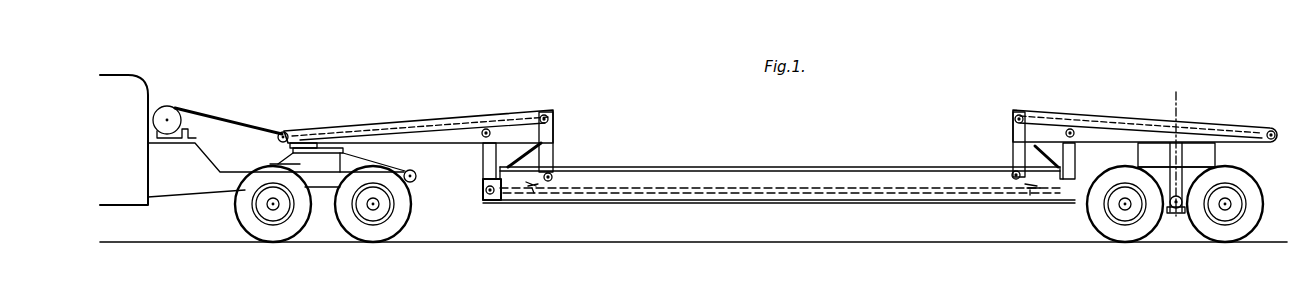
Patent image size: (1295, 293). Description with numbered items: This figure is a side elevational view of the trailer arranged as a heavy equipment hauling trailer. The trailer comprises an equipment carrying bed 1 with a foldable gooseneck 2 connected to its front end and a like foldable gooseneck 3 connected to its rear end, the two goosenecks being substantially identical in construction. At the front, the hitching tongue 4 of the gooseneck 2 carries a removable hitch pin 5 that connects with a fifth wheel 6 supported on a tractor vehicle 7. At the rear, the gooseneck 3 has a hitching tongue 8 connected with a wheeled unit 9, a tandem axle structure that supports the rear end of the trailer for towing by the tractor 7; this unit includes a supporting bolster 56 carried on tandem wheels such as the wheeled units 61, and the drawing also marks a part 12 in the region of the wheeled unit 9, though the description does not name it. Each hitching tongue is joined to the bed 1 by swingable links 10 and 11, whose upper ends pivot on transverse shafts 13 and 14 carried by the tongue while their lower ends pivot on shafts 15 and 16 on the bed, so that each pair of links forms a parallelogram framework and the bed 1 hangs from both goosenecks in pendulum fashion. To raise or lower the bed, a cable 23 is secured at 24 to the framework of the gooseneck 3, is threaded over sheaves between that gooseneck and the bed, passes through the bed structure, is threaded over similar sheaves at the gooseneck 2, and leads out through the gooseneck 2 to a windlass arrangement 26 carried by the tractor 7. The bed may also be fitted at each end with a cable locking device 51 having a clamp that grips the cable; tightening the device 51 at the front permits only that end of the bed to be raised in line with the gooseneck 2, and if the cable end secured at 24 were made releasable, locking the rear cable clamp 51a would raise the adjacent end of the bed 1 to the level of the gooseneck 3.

The equipment carrying bed 1 is at (800, 164).
The foldable gooseneck 2 is at (452, 117).
The foldable gooseneck 3 is at (1085, 110).
The hitching tongue 4 is at (405, 135).
The removable hitch pin 5 is at (289, 131).
The fifth wheel 6 is at (300, 153).
The tractor vehicle 7 is at (185, 194).
The hitching tongue 8 is at (1112, 130).
The wheeled unit 9 is at (1200, 153).
The swingable link 10 is at (484, 161).
The swingable link 11 is at (554, 143).
The axle hanger 12 is at (1166, 103).
The transverse shaft 13 is at (488, 129).
The transverse shaft 14 is at (548, 115).
The shaft 15 is at (483, 197).
The shaft 16 is at (551, 181).
The cable 23 is at (243, 120).
The cable securing point 24 is at (1265, 128).
The windlass arrangement 26 is at (173, 116).
The cable locking device 51 is at (530, 192).
The cable clamp 51a is at (1032, 196).
The supporting bolster 56 is at (1147, 150).
The wheeled unit 61 is at (1103, 228).